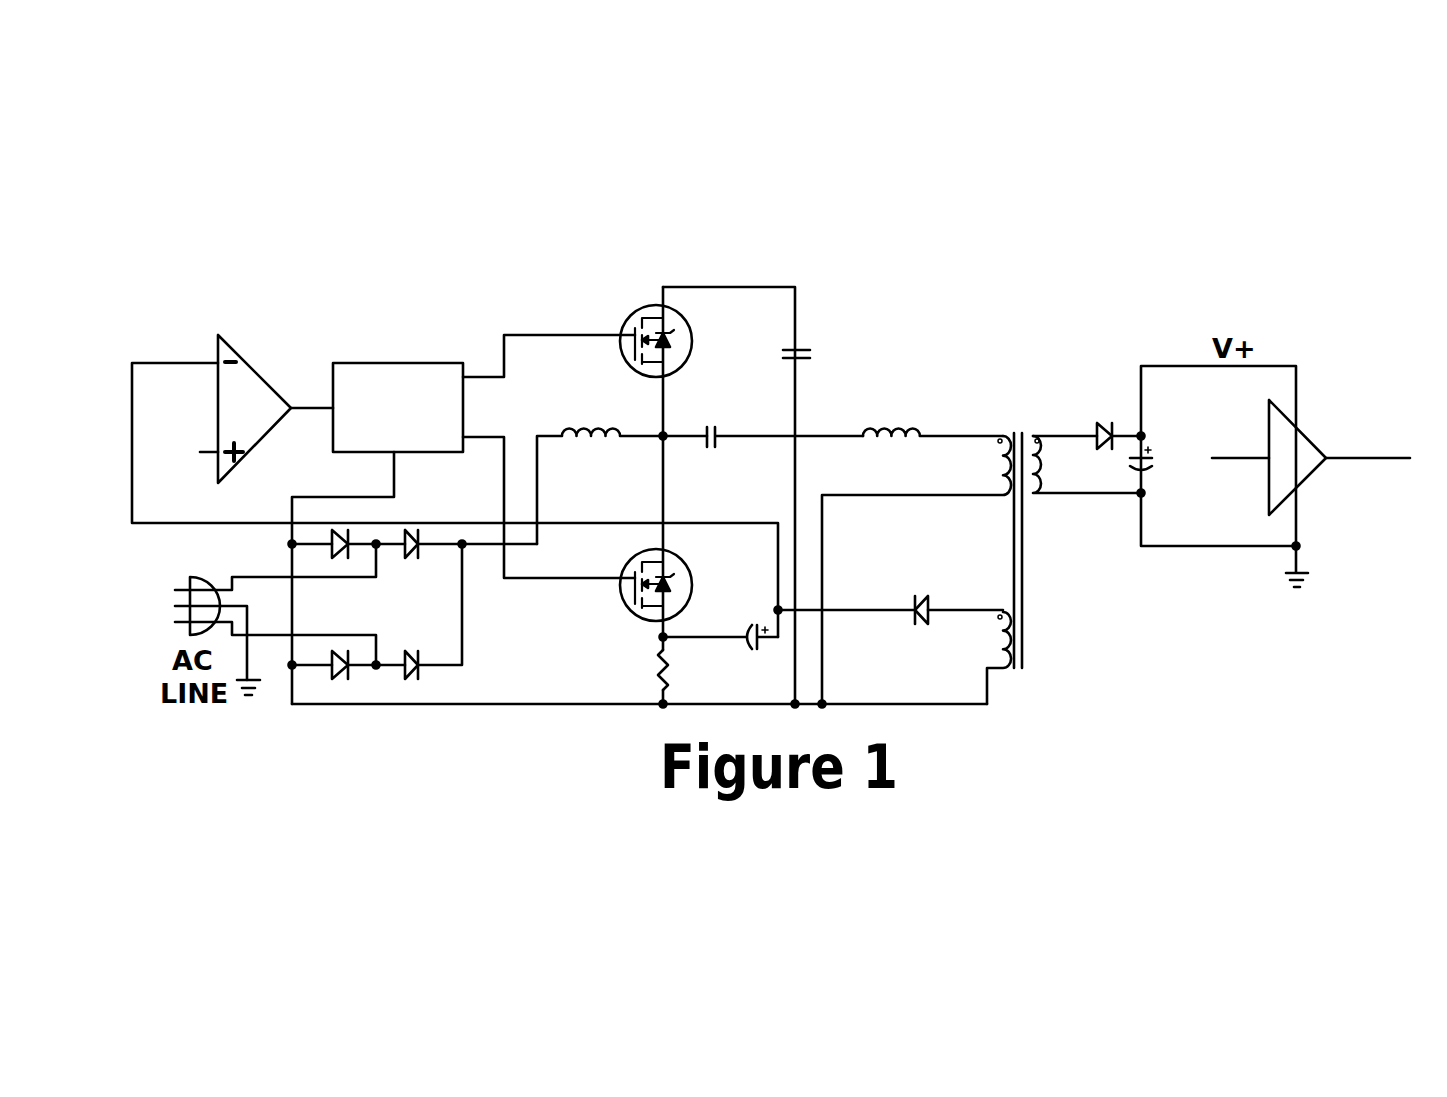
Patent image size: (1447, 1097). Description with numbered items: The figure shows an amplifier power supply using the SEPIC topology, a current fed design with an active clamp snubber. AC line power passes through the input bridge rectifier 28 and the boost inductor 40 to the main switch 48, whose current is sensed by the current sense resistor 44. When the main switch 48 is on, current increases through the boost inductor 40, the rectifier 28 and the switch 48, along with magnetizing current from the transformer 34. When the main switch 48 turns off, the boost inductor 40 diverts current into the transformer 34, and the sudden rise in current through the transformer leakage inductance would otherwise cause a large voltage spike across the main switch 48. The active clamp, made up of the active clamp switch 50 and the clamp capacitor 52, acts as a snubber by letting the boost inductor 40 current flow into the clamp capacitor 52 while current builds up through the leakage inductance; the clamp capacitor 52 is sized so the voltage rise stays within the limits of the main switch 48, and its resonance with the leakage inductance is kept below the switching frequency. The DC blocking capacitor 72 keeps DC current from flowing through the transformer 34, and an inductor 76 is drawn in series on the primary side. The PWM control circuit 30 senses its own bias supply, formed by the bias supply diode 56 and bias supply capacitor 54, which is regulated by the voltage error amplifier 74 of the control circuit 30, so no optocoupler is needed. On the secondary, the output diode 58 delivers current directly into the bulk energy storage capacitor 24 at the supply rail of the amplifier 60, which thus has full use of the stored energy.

The bulk energy storage capacitor 24 is at (1157, 462).
The input bridge rectifier 28 is at (401, 611).
The PWM control circuit 30 is at (402, 360).
The transformer 34 is at (1012, 430).
The boost inductor 40 is at (590, 427).
The current sense resistor 44 is at (657, 667).
The main switch 48 is at (693, 575).
The active clamp switch 50 is at (691, 347).
The clamp capacitor 52 is at (810, 348).
The bias supply capacitor 54 is at (748, 653).
The bias supply diode 56 is at (927, 592).
The output diode 58 is at (1105, 413).
The amplifier 60 is at (1312, 438).
The DC blocking capacitor 72 is at (717, 427).
The voltage error amplifier 74 is at (248, 360).
The inductor 76 is at (905, 422).